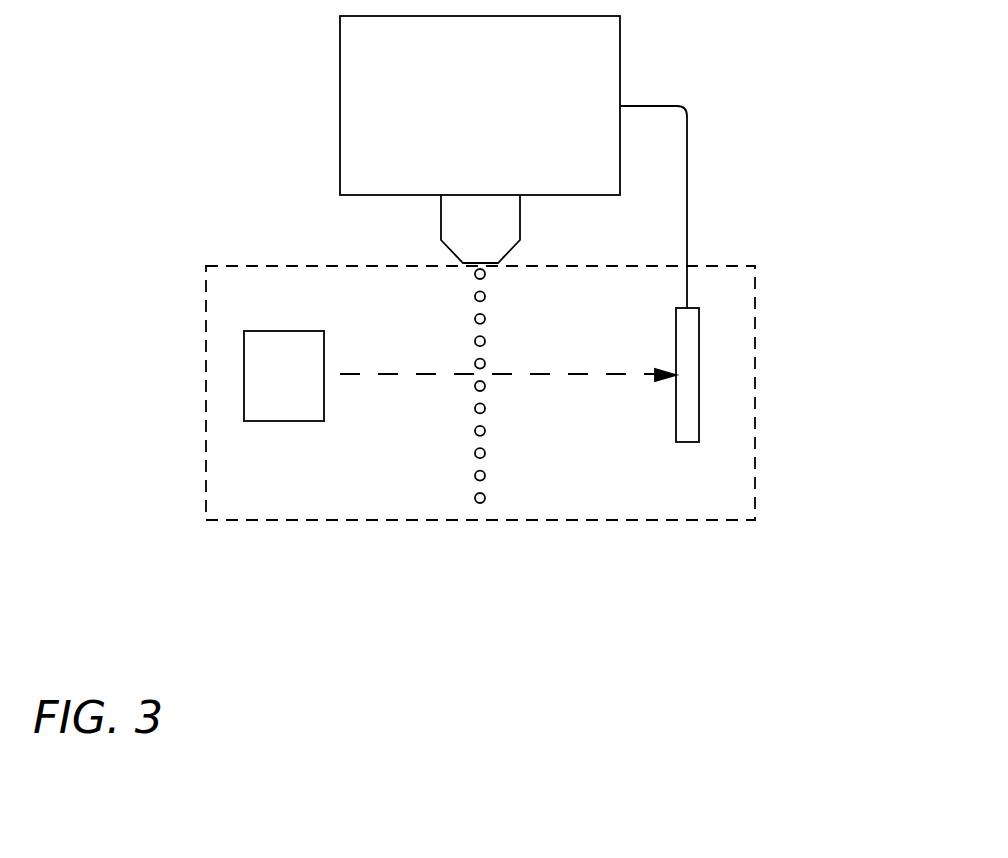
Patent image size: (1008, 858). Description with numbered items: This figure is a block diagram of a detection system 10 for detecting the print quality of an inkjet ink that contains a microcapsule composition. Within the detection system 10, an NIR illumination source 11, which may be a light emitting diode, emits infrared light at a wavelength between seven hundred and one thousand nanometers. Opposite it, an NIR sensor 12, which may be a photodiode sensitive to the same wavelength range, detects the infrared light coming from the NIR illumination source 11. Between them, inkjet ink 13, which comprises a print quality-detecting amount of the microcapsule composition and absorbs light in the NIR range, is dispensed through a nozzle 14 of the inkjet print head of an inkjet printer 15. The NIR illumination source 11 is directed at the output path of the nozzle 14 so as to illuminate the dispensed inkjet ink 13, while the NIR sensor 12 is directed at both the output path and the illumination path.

The detection system 10 is at (737, 248).
The NIR illumination source 11 is at (244, 373).
The NIR sensor 12 is at (699, 377).
The inkjet ink 13 is at (503, 446).
The nozzle 14 is at (441, 222).
The inkjet printer 15 is at (340, 106).